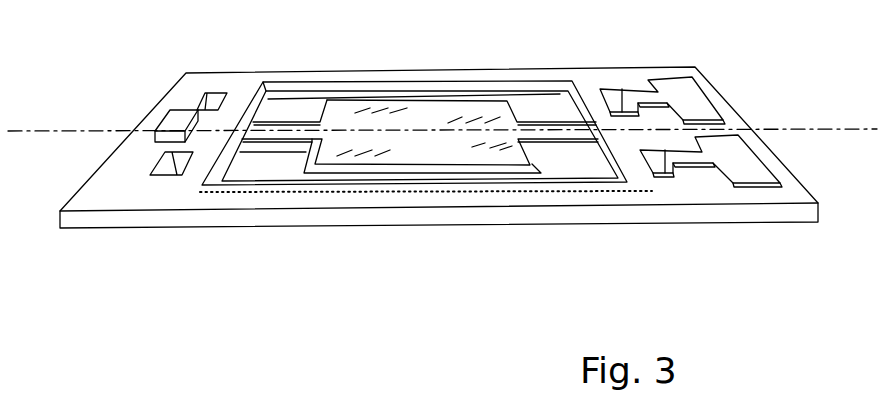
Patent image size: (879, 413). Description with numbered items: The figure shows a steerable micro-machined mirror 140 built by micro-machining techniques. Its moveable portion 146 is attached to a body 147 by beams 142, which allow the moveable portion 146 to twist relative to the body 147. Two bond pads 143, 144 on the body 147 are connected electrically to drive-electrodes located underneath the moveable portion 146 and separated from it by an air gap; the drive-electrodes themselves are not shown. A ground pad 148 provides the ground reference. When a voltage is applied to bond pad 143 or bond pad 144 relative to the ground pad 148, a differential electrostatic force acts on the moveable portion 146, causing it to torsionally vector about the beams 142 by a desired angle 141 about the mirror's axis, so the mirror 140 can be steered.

The steerable micro-machined mirror 140 is at (715, 302).
The desired angle 141 is at (47, 186).
The beams 142 is at (285, 111).
The bond pad 143 is at (693, 97).
The bond pad 144 is at (743, 150).
The moveable portion 146 is at (423, 115).
The body 147 is at (100, 224).
The ground pad 148 is at (185, 115).